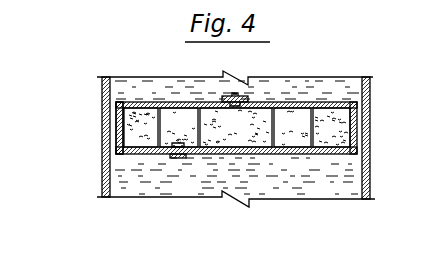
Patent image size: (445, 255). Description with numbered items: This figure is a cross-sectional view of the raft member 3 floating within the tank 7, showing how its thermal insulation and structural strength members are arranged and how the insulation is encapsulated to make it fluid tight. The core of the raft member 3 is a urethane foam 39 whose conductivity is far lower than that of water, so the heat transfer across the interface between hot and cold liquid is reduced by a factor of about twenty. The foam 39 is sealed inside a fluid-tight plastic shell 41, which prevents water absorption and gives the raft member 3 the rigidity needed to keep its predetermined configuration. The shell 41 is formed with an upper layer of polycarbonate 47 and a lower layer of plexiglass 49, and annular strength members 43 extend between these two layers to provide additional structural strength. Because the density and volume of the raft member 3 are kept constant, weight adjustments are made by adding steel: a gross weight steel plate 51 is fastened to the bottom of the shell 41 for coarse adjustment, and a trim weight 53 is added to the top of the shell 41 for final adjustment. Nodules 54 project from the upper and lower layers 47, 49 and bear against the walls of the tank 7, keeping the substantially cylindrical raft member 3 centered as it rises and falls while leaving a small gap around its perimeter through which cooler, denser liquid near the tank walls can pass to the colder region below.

The raft member 3 is at (312, 97).
The tank 7 is at (371, 130).
The urethane foam 39 is at (118, 136).
The fluid-tight plastic shell 41 is at (108, 116).
The annular strength members 43 is at (197, 128).
The upper layer of polycarbonate 47 is at (186, 102).
The lower layer of plexiglass 49 is at (140, 155).
The gross weight steel plate 51 is at (223, 156).
The trim weight 53 is at (250, 100).
The nodules 54 is at (126, 87).